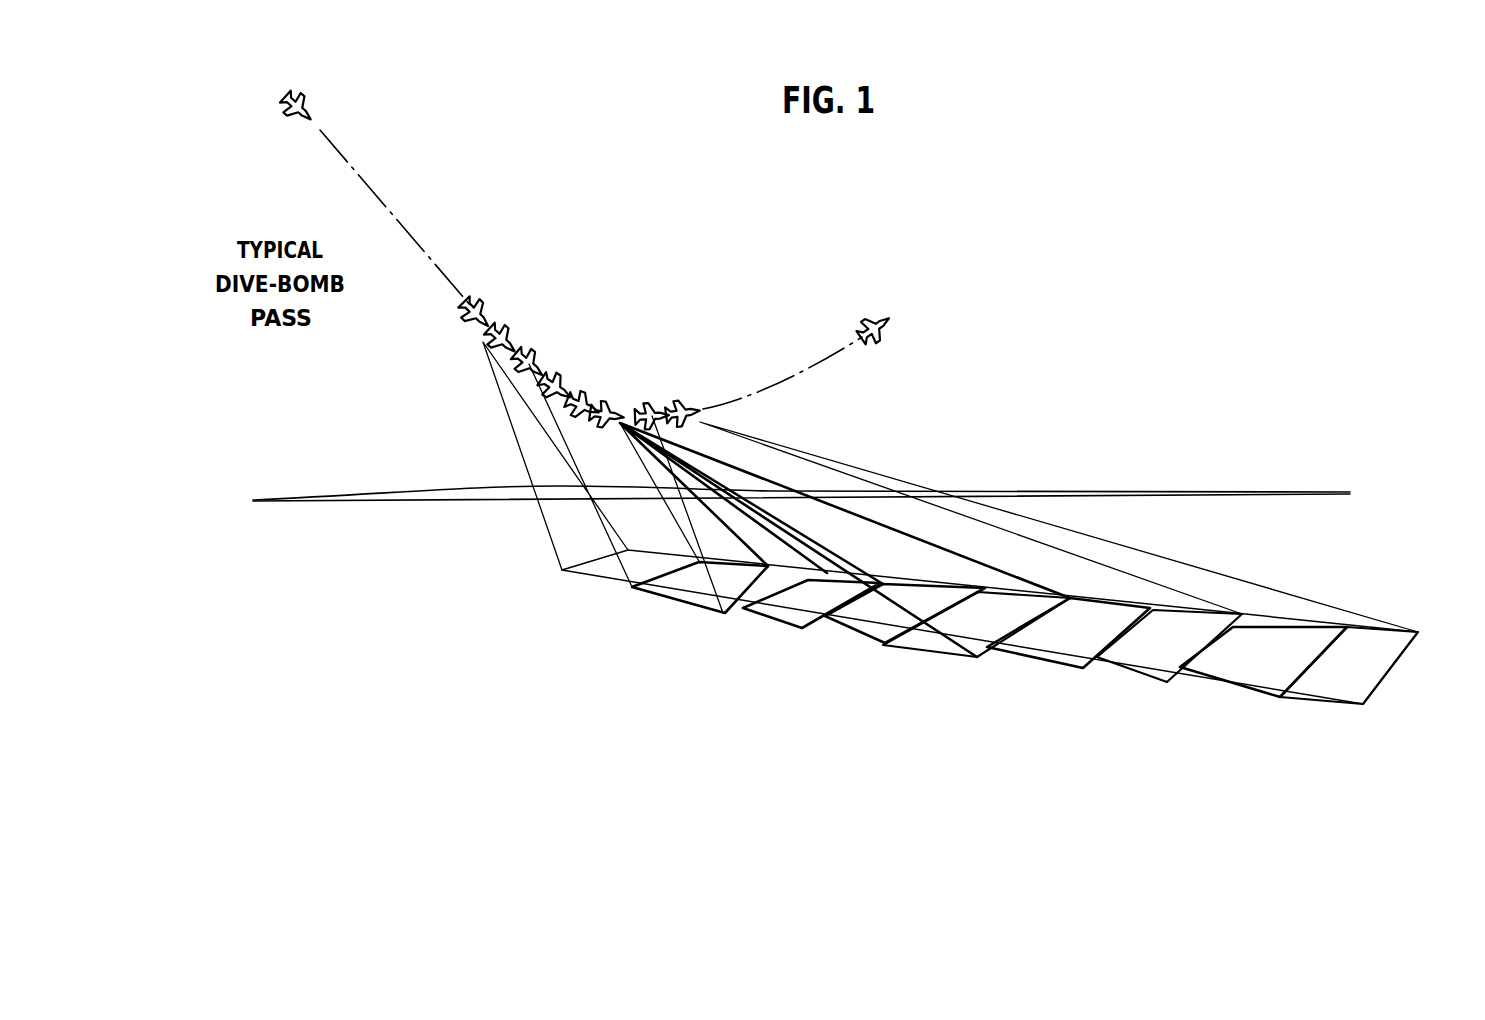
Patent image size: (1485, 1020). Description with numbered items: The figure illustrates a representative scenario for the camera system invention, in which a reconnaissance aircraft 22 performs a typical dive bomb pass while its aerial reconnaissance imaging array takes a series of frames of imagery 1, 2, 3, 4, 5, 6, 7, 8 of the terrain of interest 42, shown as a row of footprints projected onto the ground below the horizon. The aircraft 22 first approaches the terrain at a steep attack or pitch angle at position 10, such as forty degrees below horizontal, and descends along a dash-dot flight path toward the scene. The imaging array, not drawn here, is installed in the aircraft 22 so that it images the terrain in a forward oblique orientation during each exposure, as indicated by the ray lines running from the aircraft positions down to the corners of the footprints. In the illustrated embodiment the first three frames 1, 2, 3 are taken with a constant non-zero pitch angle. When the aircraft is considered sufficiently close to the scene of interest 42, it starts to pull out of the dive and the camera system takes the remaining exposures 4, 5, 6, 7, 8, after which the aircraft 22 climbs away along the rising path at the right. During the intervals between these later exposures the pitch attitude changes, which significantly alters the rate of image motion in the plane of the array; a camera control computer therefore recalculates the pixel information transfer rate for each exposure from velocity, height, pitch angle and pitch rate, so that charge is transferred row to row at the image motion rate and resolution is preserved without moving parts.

The position 10 is at (318, 112).
The reconnaissance aircraft 22 is at (880, 318).
The terrain of interest 42 is at (903, 687).
The frame of imagery 1 is at (677, 607).
The frame of imagery 2 is at (770, 623).
The frame of imagery 3 is at (853, 634).
The frame of imagery 4 is at (942, 652).
The frame of imagery 5 is at (1045, 665).
The frame of imagery 6 is at (1123, 675).
The frame of imagery 7 is at (1228, 687).
The frame of imagery 8 is at (1323, 697).